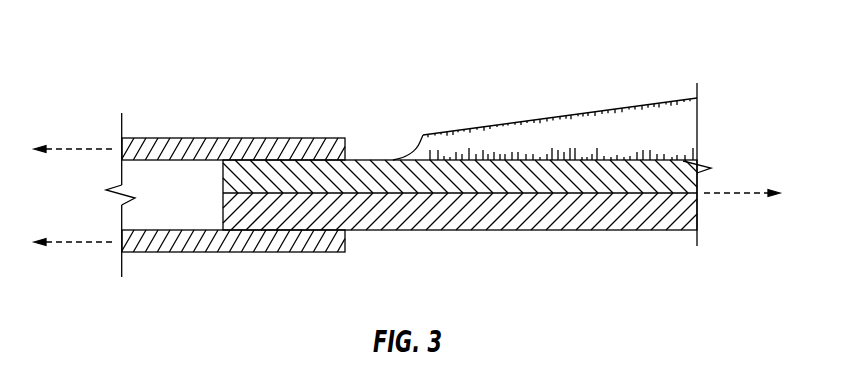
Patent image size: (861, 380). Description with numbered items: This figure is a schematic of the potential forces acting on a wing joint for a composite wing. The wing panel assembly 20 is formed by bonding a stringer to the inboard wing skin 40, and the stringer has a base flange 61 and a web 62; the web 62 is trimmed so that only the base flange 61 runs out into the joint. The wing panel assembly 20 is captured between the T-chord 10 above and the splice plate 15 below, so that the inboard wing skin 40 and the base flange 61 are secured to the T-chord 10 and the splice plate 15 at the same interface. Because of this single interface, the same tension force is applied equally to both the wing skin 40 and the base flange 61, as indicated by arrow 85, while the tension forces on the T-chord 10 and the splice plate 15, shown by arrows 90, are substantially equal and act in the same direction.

The T-chord 10 is at (225, 137).
The splice plate 15 is at (225, 252).
The wing panel assembly 20 is at (527, 113).
The inboard wing skin 40 is at (483, 230).
The base flange 61 is at (377, 159).
The web 62 is at (563, 117).
The arrow 85 is at (735, 193).
The arrows 90 is at (80, 149).